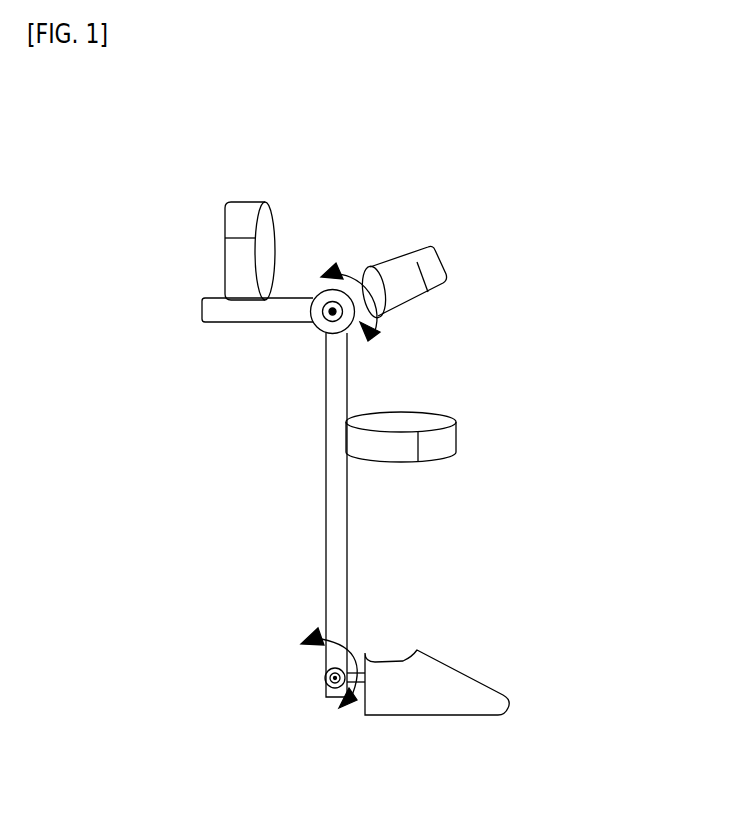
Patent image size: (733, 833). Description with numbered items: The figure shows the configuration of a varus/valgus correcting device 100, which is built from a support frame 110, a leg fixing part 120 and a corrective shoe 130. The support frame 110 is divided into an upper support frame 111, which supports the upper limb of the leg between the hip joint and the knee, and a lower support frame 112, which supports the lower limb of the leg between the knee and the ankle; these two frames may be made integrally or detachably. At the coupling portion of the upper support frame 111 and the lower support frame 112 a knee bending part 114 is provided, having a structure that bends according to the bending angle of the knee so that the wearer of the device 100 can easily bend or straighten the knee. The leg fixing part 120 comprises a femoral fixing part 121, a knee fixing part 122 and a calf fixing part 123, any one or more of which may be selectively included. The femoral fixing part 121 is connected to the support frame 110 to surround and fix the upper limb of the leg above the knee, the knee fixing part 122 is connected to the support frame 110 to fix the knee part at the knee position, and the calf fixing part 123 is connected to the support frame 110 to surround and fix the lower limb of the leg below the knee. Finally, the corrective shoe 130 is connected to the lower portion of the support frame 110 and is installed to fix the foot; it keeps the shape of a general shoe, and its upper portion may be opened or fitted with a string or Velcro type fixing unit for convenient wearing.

The varus/valgus correcting device 100 is at (180, 105).
The support frame 110 is at (127, 535).
The upper support frame 111 is at (273, 312).
The lower support frame 112 is at (343, 533).
The knee bending part 114 is at (322, 323).
The leg fixing part 120 is at (522, 93).
The femoral fixing part 121 is at (255, 200).
The knee fixing part 122 is at (443, 250).
The calf fixing part 123 is at (452, 440).
The corrective shoe 130 is at (431, 678).